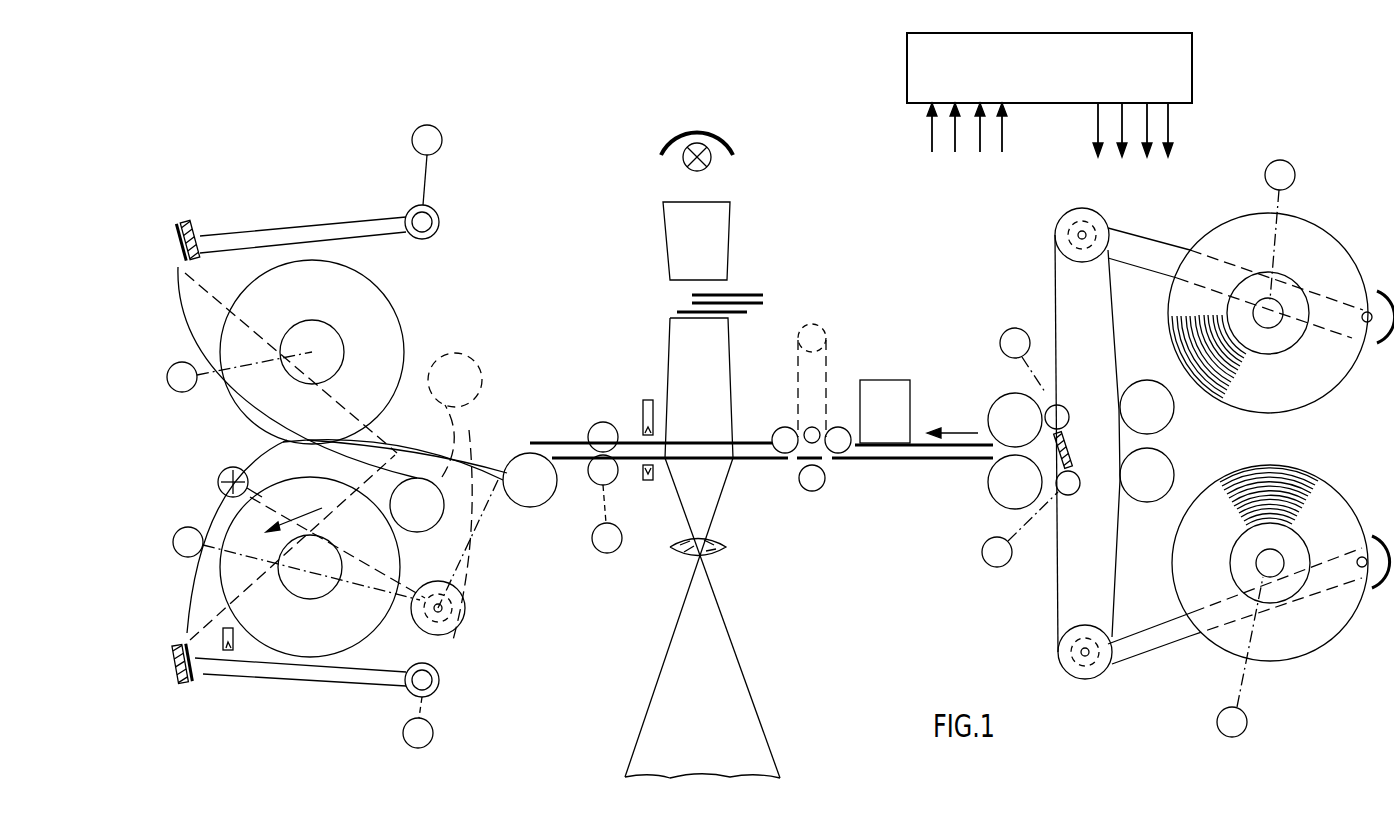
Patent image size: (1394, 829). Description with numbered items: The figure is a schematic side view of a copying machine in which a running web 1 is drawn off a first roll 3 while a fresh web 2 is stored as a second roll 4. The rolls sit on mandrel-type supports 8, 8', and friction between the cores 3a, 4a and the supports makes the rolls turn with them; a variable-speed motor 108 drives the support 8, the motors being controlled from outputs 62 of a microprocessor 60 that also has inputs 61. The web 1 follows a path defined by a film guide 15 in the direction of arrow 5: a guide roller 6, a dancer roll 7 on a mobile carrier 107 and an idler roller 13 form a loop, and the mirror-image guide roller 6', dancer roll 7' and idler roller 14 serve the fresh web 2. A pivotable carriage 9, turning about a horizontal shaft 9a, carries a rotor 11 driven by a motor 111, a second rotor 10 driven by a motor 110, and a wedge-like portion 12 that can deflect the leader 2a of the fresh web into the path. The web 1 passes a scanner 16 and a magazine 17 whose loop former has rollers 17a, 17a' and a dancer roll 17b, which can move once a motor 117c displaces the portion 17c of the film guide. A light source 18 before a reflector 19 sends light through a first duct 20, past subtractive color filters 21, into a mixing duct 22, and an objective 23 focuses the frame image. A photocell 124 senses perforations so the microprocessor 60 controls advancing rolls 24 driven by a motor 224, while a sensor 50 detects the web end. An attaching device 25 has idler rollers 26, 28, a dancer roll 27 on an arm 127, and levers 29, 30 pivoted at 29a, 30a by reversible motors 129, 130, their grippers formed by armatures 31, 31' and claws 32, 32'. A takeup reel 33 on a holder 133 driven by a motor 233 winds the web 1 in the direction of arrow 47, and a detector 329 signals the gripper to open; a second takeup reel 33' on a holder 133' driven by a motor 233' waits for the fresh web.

The running web 1 is at (1048, 583).
The fresh web 2 is at (1049, 290).
The leader of the fresh web 2a is at (1040, 426).
The first roll 3 is at (1322, 635).
The core of the first roll 3a is at (1246, 563).
The second roll 4 is at (1310, 240).
The core of the second roll 4a is at (1290, 290).
The arrow indicating web advance direction 5 is at (952, 421).
The guide roller 6 is at (1155, 466).
The guide roller 6' is at (1165, 407).
The dancer roll 7 is at (1061, 652).
The dancer roll 7' is at (1054, 233).
The support 8 is at (1294, 552).
The support 8' is at (1280, 323).
The pivotable carriage 9 is at (1072, 462).
The horizontal shaft 9a is at (1065, 446).
The second rotor 10 is at (1068, 495).
The rotor 11 is at (1060, 408).
The wedge-like portion 12 is at (1070, 435).
The idler roller 13 is at (995, 500).
The idler roller 14 is at (998, 405).
The film guide 15 is at (752, 462).
The scanner 16 is at (885, 393).
The magazine 17 is at (826, 303).
The roller of the loop former 17a is at (836, 403).
The roller of the loop former 17a' is at (771, 419).
The dancer roll of the loop former 17b is at (808, 490).
The movable portion of the film guide 17c is at (820, 462).
The light source 18 is at (708, 162).
The reflector 19 is at (730, 143).
The first duct 20 is at (720, 243).
The subtractive color filters 21 is at (740, 293).
The mixing duct 22 is at (680, 365).
The objective 23 is at (680, 550).
The advancing rolls 24 is at (585, 425).
The attaching device 25 is at (460, 309).
The idler roller 26 is at (545, 495).
The dancer roll 27 is at (462, 392).
The idler roller 28 is at (440, 512).
The lever 29 is at (343, 675).
The pivot of the lever 29a is at (439, 682).
The lever 30 is at (340, 228).
The pivot of the lever 30a is at (438, 230).
The armature 31 is at (167, 710).
The armature 31' is at (220, 204).
The magnetizable claw 32 is at (205, 680).
The magnetizable claw 32' is at (178, 220).
The takeup reel 33 is at (290, 562).
The second takeup reel 33' is at (295, 352).
The arrow indicating rotation direction 47 is at (302, 490).
The sensor 50 is at (643, 412).
The microprocessor 60 is at (1192, 62).
The inputs of the microprocessor 61 is at (1004, 128).
The outputs of the microprocessor 62 is at (1170, 128).
The mobile carrier 107 is at (1165, 645).
The variable-speed motor 108 is at (1295, 170).
The motor for the second rotor 110 is at (984, 560).
The motor for the rotor 111 is at (1012, 330).
The motor for the film guide portion 117c is at (818, 420).
The photocell 124 is at (655, 478).
The arm 127 is at (412, 610).
The reversible motor 129 is at (433, 730).
The reversible motor 130 is at (441, 135).
The holder 133 is at (331, 575).
The second holder 133' is at (313, 332).
The motor for the advancing roll 224 is at (593, 548).
The variable-speed motor 233 is at (289, 548).
The motor 233' is at (230, 361).
The detector 329 is at (233, 636).